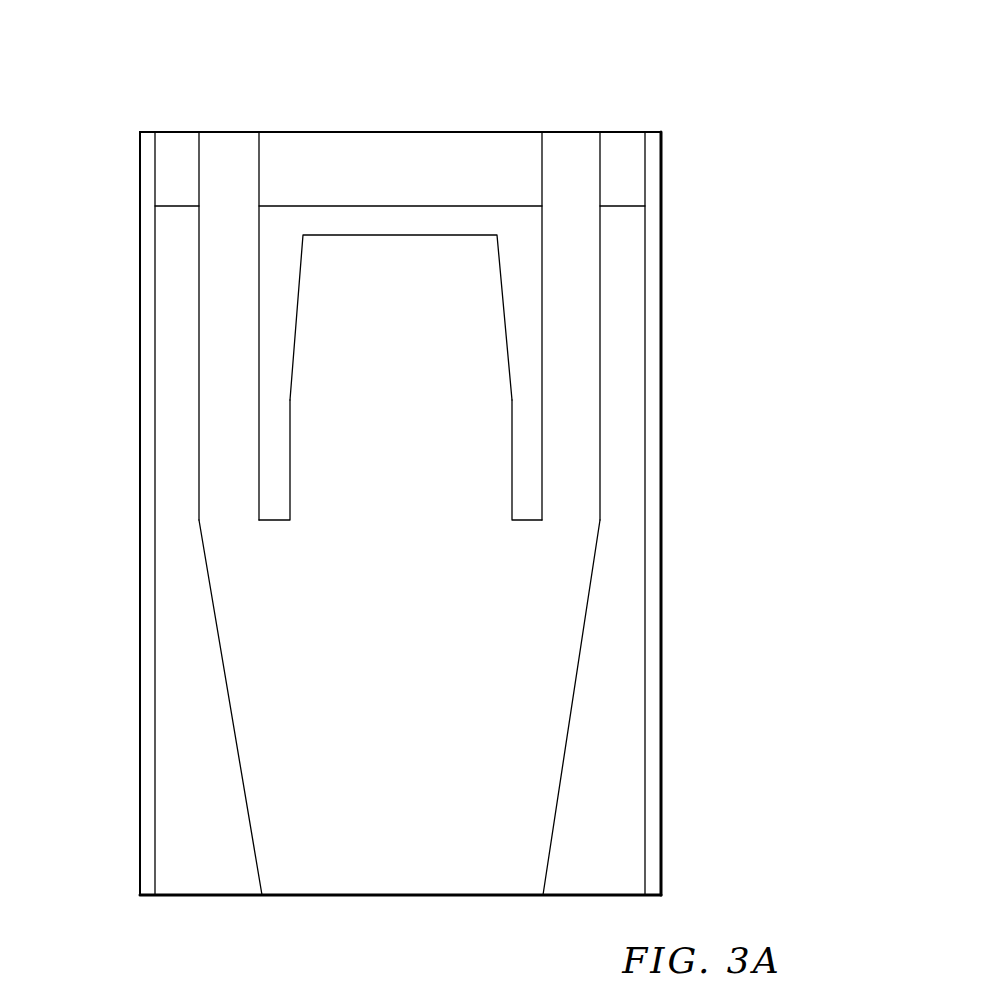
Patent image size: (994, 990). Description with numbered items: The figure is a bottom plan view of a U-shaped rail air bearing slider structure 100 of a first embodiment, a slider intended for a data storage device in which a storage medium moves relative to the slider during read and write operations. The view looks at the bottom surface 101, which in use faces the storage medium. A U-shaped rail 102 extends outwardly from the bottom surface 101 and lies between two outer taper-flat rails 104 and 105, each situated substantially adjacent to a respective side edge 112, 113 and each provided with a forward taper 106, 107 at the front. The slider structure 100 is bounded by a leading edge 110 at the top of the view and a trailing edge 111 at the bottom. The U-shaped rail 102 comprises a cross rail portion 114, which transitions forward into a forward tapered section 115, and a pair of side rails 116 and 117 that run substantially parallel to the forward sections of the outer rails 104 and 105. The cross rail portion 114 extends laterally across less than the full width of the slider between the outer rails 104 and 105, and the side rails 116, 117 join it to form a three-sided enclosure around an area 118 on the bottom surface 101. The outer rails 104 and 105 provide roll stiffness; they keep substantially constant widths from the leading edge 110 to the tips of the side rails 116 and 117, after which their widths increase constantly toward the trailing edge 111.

The U-shaped rail air bearing slider structure 100 is at (608, 78).
The bottom surface 101 is at (318, 858).
The U-shaped rail 102 is at (277, 132).
The outer taper-flat rail 104 is at (618, 572).
The outer taper-flat rail 105 is at (182, 572).
The forward taper 106 is at (622, 147).
The forward taper 107 is at (183, 143).
The leading edge 110 is at (140, 132).
The trailing edge 111 is at (140, 895).
The side edge 112 is at (661, 408).
The side edge 113 is at (140, 405).
The cross rail portion 114 is at (340, 217).
The forward tapered section 115 is at (450, 155).
The side rail 116 is at (527, 521).
The side rail 117 is at (273, 521).
The area 118 is at (417, 332).